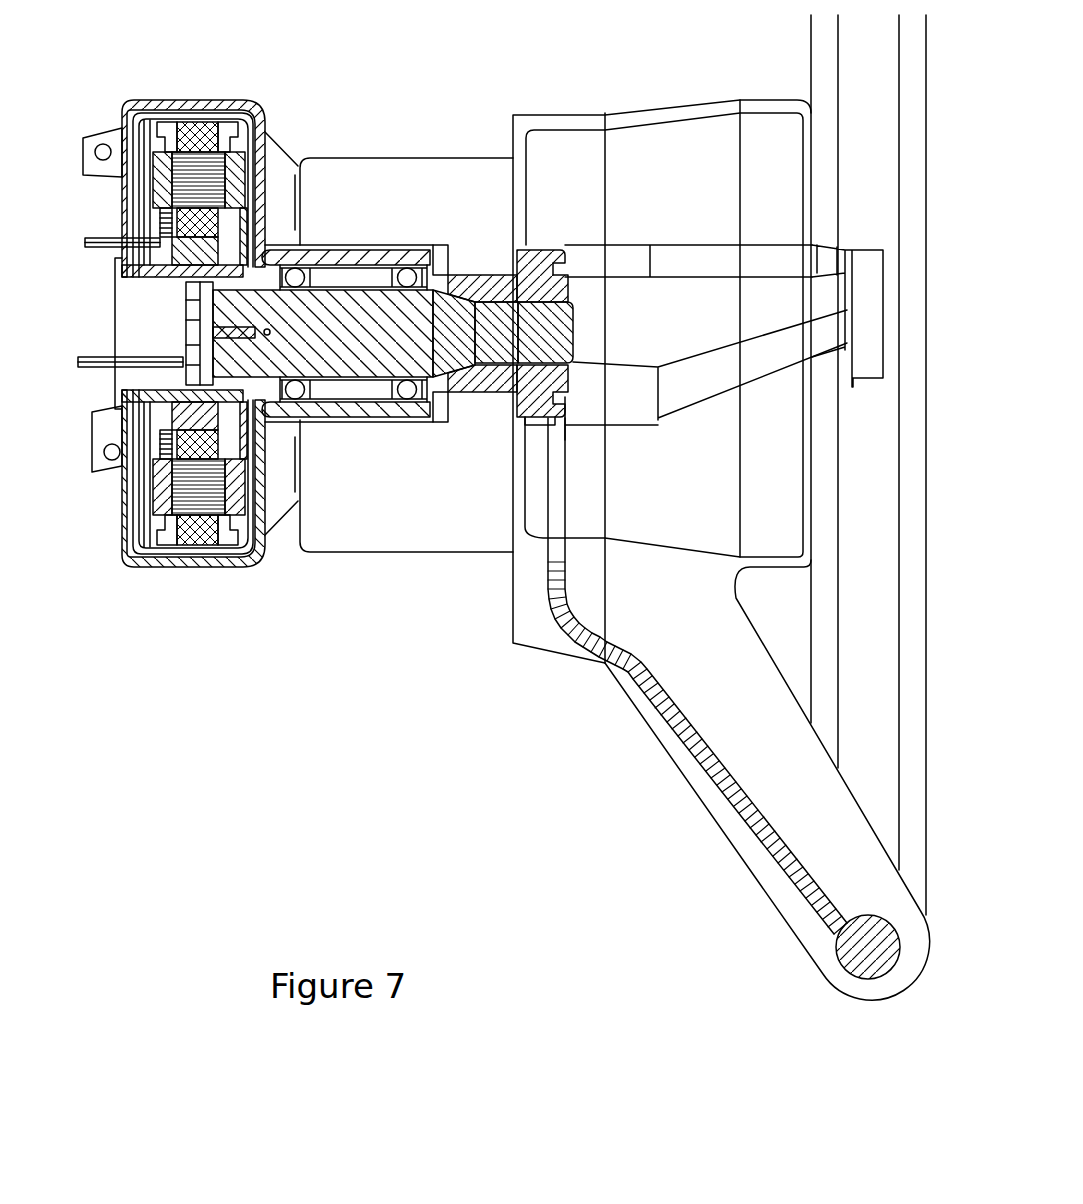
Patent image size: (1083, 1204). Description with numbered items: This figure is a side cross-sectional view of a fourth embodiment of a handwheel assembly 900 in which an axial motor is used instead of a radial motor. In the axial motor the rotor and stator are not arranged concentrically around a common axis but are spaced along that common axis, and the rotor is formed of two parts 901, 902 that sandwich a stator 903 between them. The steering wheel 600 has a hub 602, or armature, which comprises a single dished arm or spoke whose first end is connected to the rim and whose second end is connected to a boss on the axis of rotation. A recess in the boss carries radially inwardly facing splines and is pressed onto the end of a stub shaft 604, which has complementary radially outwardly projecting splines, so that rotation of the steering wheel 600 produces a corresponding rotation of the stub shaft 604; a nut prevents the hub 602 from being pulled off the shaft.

The steering wheel 600 is at (837, 990).
The hub 602 is at (713, 817).
The stub shaft 604 is at (466, 372).
The handwheel assembly 900 is at (440, 672).
The rotor part 901 is at (160, 187).
The rotor part 902 is at (246, 176).
The stator 903 is at (250, 160).